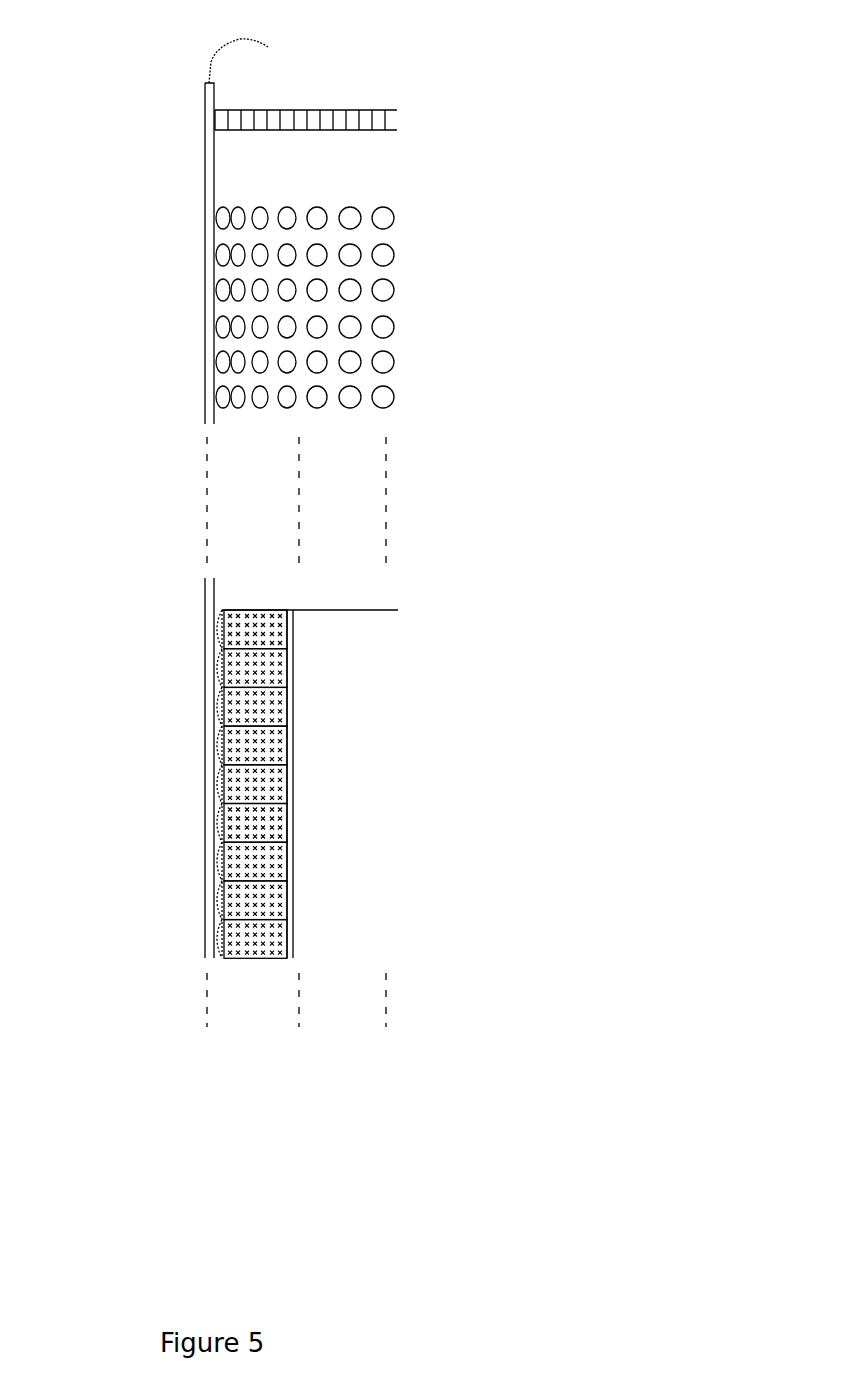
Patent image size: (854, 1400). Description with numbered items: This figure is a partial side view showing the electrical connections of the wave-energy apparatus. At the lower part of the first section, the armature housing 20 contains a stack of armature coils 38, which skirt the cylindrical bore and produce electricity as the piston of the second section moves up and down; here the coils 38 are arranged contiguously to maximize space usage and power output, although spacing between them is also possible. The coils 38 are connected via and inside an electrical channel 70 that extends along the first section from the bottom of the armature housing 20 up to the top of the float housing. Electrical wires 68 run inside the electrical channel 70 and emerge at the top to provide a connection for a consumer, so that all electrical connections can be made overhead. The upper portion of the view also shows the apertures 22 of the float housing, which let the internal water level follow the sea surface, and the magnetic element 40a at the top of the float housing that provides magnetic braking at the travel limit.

The electrical channel 70 is at (207, 318).
The electrical wires 68 is at (254, 51).
The magnetic element 40a is at (347, 118).
The apertures 22 is at (395, 290).
The armature housing 20 is at (210, 810).
The armature coils 38 is at (220, 907).